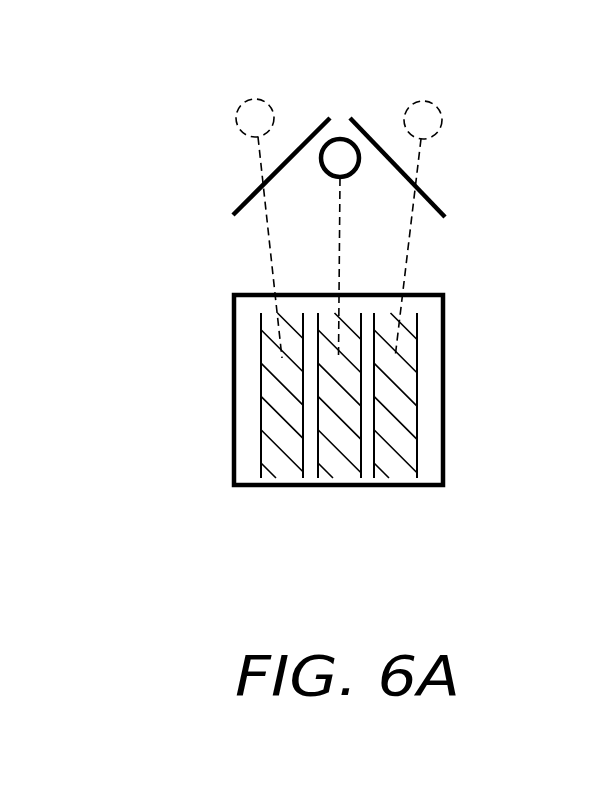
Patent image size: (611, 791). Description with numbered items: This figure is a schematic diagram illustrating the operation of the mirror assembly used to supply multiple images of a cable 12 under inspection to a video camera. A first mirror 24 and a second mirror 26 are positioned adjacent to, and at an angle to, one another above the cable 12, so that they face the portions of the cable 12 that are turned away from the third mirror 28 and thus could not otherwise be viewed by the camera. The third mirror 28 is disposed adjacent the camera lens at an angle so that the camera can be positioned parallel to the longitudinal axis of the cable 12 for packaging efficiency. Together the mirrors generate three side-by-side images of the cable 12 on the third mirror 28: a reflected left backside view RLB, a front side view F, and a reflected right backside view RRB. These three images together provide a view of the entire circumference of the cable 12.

The cable 12 is at (342, 153).
The first mirror 24 is at (242, 200).
The second mirror 26 is at (437, 197).
The third mirror 28 is at (440, 428).
The reflected left backside view RLB is at (280, 467).
The front side view F is at (341, 465).
The reflected right backside view RRB is at (392, 458).